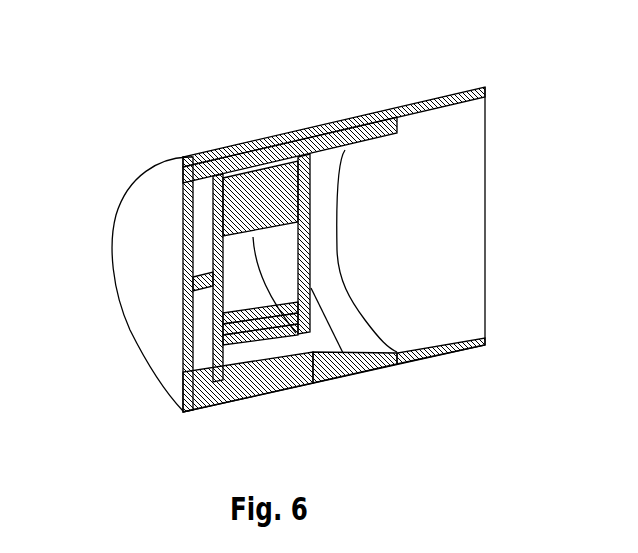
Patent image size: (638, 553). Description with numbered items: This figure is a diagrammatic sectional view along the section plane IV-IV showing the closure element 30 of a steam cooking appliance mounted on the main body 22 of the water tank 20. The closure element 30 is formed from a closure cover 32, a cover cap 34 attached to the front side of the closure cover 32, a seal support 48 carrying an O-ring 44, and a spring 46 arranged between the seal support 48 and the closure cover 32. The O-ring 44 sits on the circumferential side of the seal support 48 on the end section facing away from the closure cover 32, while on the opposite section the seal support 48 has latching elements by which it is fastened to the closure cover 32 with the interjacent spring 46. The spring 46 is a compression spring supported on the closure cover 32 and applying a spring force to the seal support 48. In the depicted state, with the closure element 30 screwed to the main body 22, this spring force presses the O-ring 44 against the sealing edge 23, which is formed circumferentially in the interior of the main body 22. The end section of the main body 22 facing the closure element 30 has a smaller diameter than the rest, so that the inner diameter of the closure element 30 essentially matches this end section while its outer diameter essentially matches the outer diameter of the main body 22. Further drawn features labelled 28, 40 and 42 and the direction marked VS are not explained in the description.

The water tank 20 is at (386, 96).
The main body 22 is at (455, 157).
The sealing edge 23 is at (302, 175).
The housing bore 28 is at (322, 312).
The closure element 30 is at (199, 136).
The closure cover 32 is at (259, 393).
The cover cap 34 is at (150, 193).
The lens element 40 is at (297, 358).
The lens element 42 is at (297, 358).
The O-ring 44 is at (297, 362).
The spring 46 is at (257, 180).
The seal support 48 is at (313, 277).
The viewing direction VS is at (101, 326).